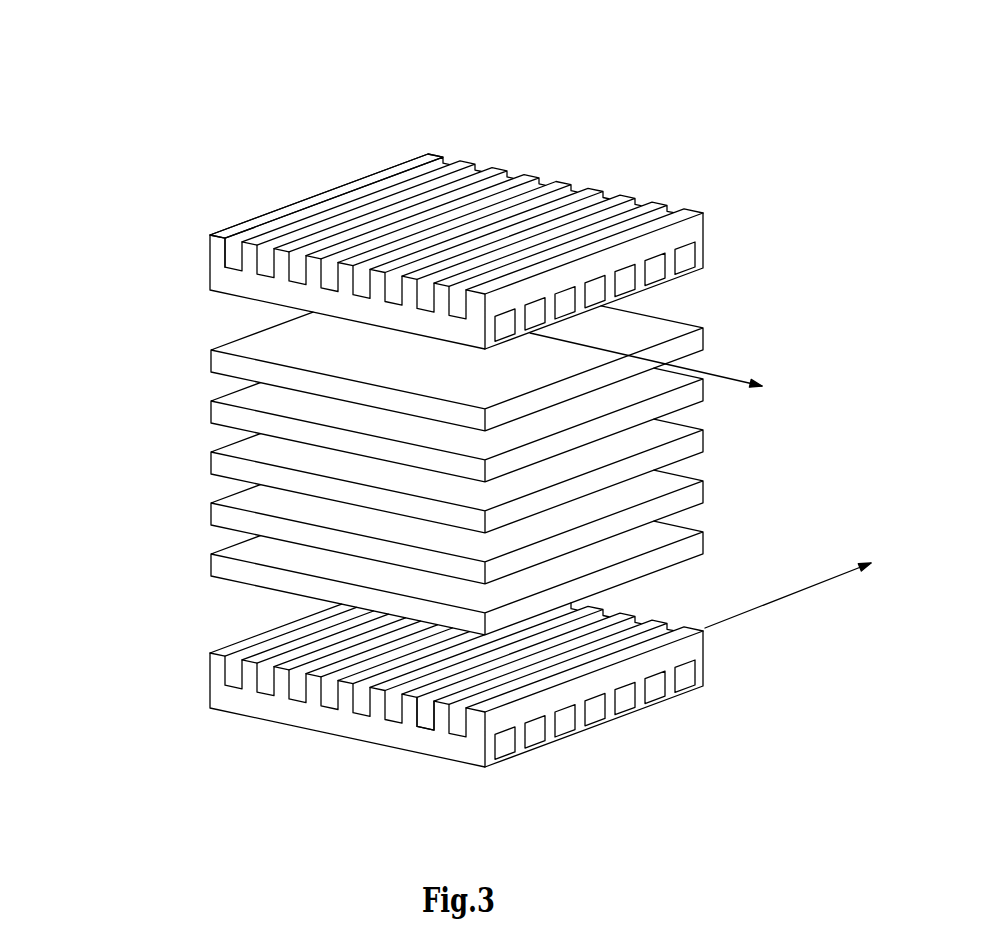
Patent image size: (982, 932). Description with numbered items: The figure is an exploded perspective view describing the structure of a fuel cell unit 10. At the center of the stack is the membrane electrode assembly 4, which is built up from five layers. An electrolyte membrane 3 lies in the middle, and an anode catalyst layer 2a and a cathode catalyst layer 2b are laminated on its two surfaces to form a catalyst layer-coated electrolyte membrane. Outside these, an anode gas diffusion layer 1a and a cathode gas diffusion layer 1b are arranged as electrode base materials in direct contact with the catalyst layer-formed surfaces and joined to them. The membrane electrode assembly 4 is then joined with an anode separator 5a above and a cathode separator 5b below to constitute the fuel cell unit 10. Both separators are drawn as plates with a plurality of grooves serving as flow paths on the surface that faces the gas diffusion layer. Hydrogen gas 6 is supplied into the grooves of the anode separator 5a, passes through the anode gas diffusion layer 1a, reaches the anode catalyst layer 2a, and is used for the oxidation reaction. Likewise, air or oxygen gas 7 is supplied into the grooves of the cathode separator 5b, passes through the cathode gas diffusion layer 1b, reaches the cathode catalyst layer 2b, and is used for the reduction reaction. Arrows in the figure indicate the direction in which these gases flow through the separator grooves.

The fuel cell unit 10 is at (435, 27).
The anode gas diffusion layer 1a is at (210, 357).
The anode catalyst layer 2a is at (210, 408).
The electrolyte membrane 3 is at (210, 459).
The cathode catalyst layer 2b is at (210, 510).
The cathode gas diffusion layer 1b is at (210, 561).
The membrane electrode assembly 4 is at (840, 322).
The anode separator 5a is at (705, 236).
The cathode separator 5b is at (705, 654).
The hydrogen gas 6 is at (195, 263).
The air or oxygen gas 7 is at (430, 727).